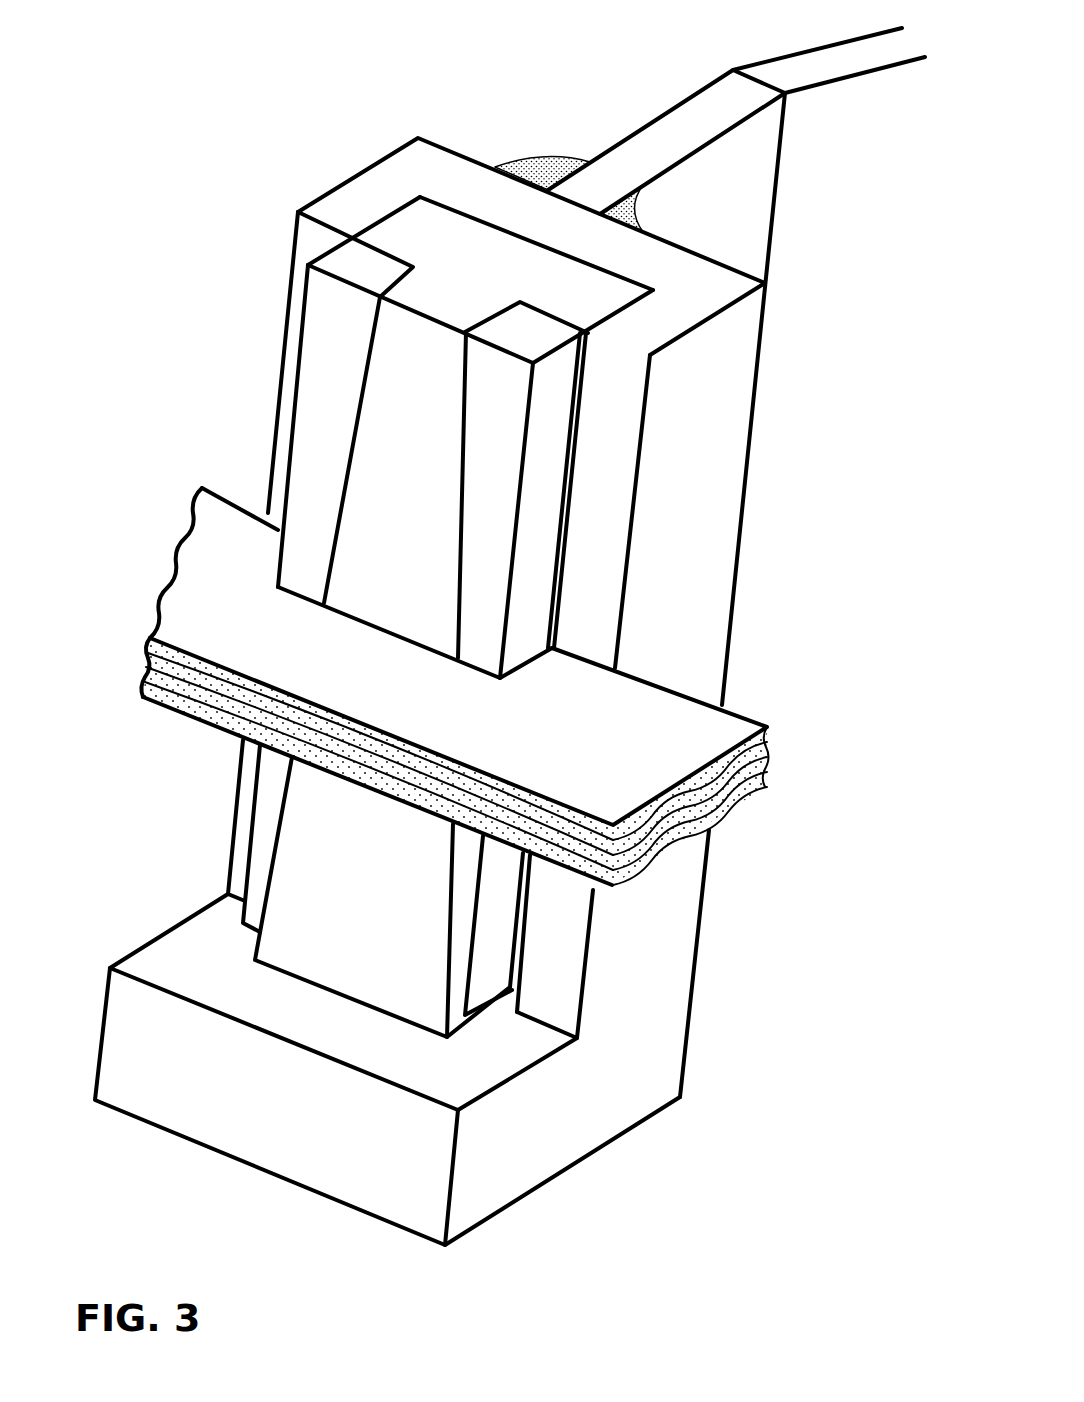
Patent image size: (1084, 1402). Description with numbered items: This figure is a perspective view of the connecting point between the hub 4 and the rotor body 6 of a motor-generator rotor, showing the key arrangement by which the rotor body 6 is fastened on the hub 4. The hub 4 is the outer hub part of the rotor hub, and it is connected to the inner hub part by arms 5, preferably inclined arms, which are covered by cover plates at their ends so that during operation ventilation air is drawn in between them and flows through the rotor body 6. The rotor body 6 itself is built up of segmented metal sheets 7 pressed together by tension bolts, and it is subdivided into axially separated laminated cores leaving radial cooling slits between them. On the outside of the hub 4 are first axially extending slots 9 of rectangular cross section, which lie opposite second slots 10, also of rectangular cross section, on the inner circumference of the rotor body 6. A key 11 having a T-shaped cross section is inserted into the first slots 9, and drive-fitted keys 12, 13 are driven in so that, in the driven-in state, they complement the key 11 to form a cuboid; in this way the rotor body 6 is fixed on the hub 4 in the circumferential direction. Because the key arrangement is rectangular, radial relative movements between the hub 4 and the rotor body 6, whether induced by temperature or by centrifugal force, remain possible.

The hub 4 is at (395, 180).
The arms 5 is at (835, 68).
The rotor body 6 is at (812, 893).
The segmented metal sheets 7 is at (595, 722).
The first axially extending slots 9 is at (522, 240).
The second slots 10 is at (390, 630).
The key 11 is at (420, 238).
The drive-fitted key 12 is at (327, 402).
The drive-fitted key 13 is at (505, 458).